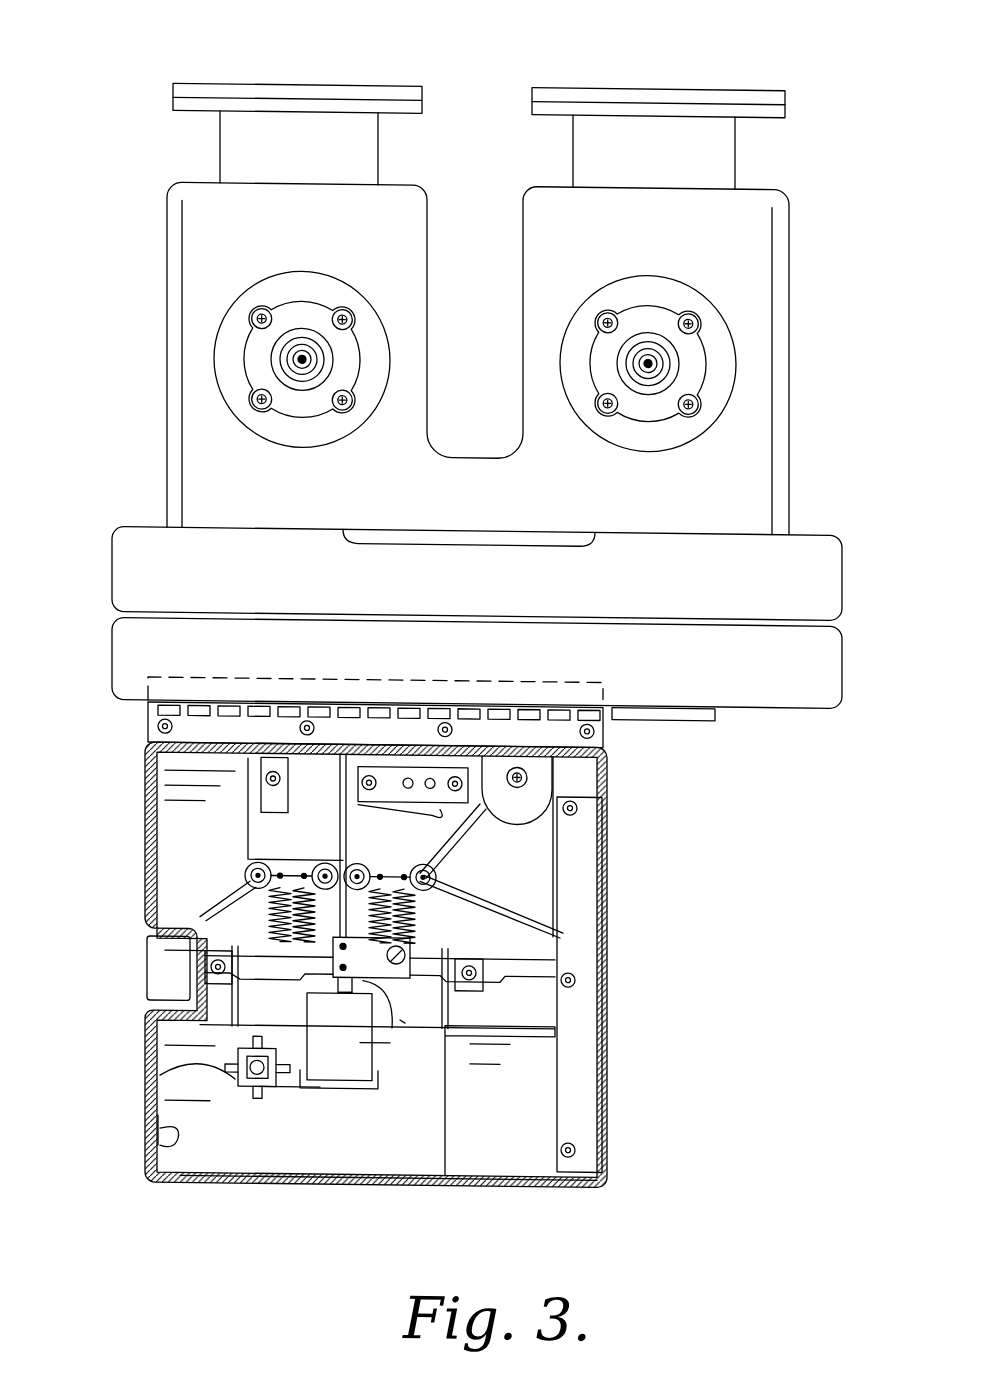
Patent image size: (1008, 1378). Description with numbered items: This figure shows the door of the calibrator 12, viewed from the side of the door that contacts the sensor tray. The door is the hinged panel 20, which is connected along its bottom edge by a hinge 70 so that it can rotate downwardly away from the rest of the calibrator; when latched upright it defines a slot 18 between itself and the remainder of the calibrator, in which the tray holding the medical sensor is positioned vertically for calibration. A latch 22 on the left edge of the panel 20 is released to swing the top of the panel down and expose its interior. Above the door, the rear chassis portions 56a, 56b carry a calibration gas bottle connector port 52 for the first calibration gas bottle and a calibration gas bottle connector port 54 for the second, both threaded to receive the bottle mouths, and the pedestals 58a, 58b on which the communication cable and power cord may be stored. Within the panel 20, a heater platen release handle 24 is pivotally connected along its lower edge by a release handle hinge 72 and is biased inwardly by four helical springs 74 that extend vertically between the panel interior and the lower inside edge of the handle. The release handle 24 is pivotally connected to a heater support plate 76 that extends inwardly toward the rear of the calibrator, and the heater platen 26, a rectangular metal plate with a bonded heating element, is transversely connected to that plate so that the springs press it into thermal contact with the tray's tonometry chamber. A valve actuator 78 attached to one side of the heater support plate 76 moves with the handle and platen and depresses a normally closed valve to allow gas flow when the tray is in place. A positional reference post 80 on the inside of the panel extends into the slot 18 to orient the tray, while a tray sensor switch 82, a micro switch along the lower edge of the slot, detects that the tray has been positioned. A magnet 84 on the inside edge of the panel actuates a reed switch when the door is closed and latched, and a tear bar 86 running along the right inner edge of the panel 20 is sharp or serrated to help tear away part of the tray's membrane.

The calibrator 12 is at (491, 367).
The slot 18 is at (148, 717).
The hinged panel 20 is at (373, 976).
The latch 22 is at (148, 982).
The heater platen release handle 24 is at (400, 1017).
The heater platen 26 is at (330, 1078).
The calibration gas bottle connector port 52 is at (650, 357).
The calibration gas bottle connector port 54 is at (300, 358).
The rear chassis portion 56a is at (760, 225).
The rear chassis portion 56b is at (195, 214).
The pedestal 58a is at (668, 83).
The pedestal 58b is at (295, 81).
The hinge 70 is at (603, 712).
The release handle hinge 72 is at (420, 1009).
The helical springs 74 is at (245, 876).
The heater support plate 76 is at (400, 1017).
The valve actuator 78 is at (412, 948).
The positional reference post 80 is at (238, 1061).
The tray sensor switch 82 is at (450, 792).
The magnet 84 is at (162, 1140).
The tear bar 86 is at (590, 950).